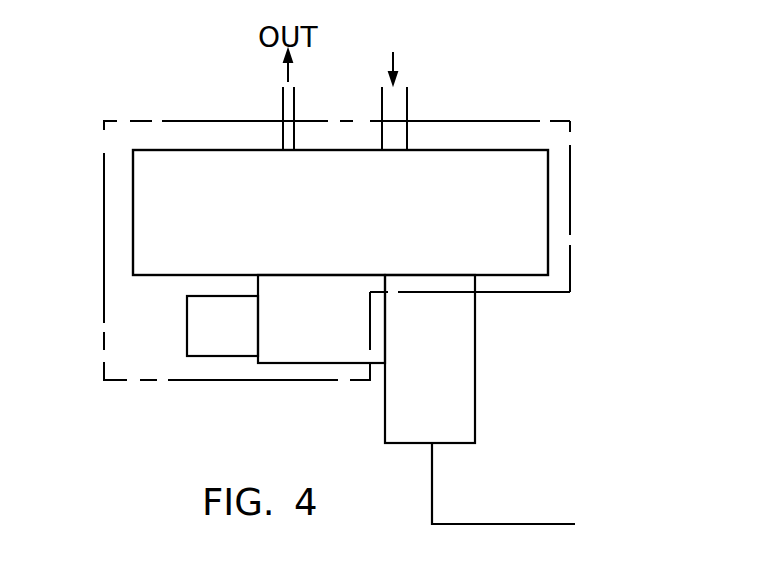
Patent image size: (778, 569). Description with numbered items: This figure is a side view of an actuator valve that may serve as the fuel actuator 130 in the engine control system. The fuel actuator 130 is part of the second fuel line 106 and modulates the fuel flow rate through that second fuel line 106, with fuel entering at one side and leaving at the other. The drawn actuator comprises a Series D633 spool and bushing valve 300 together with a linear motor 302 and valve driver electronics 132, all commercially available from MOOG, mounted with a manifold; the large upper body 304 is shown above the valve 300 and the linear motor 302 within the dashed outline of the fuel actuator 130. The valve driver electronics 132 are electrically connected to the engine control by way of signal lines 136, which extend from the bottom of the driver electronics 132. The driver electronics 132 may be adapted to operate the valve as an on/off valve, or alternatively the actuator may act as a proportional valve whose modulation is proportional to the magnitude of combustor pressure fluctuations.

The second fuel line 106 is at (412, 95).
The fuel actuator 130 is at (570, 121).
The valve driver electronics 132 is at (475, 368).
The signal lines 136 is at (490, 522).
The spool and bushing valve 300 is at (308, 363).
The linear motor 302 is at (218, 356).
The housing 304 is at (132, 213).